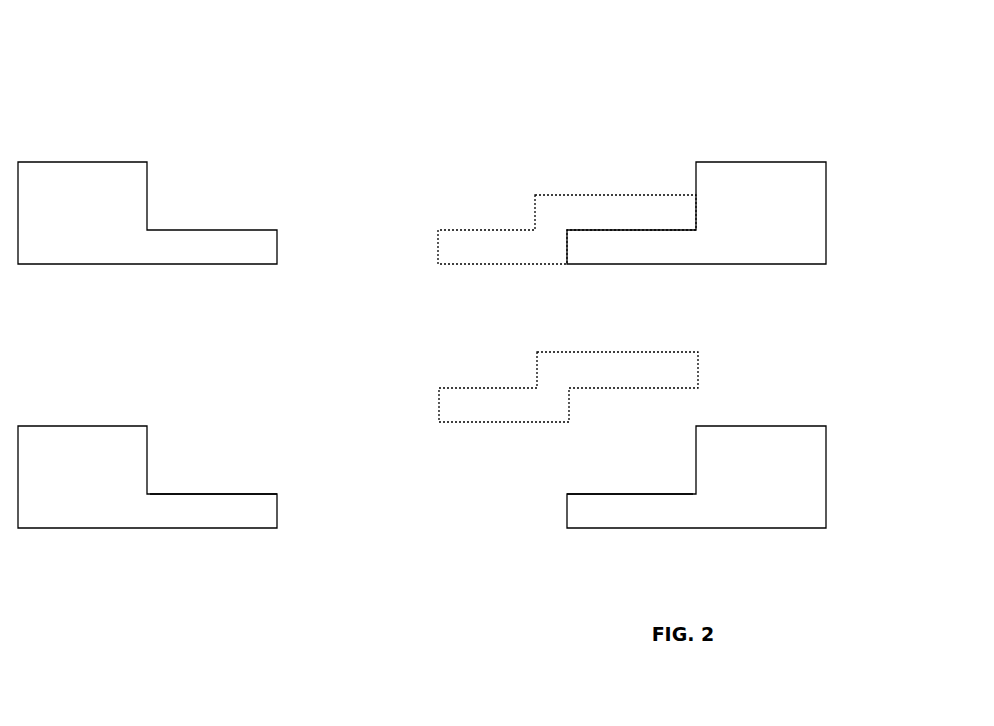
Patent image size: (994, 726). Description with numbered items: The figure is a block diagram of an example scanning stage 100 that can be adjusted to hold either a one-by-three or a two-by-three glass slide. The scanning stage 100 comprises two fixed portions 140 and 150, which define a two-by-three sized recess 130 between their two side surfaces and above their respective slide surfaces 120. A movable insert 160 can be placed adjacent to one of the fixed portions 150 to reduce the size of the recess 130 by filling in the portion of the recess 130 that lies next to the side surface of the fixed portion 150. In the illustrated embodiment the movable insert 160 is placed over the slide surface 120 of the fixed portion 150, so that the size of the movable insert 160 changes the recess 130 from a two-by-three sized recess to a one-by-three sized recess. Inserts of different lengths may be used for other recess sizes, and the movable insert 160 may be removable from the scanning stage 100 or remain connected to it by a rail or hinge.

The scanning stage 100 is at (107, 125).
The slide surface 120 is at (256, 502).
The recess 130 is at (683, 474).
The fixed portion 140 is at (147, 345).
The fixed portion 150 is at (696, 345).
The movable insert 160 is at (610, 352).